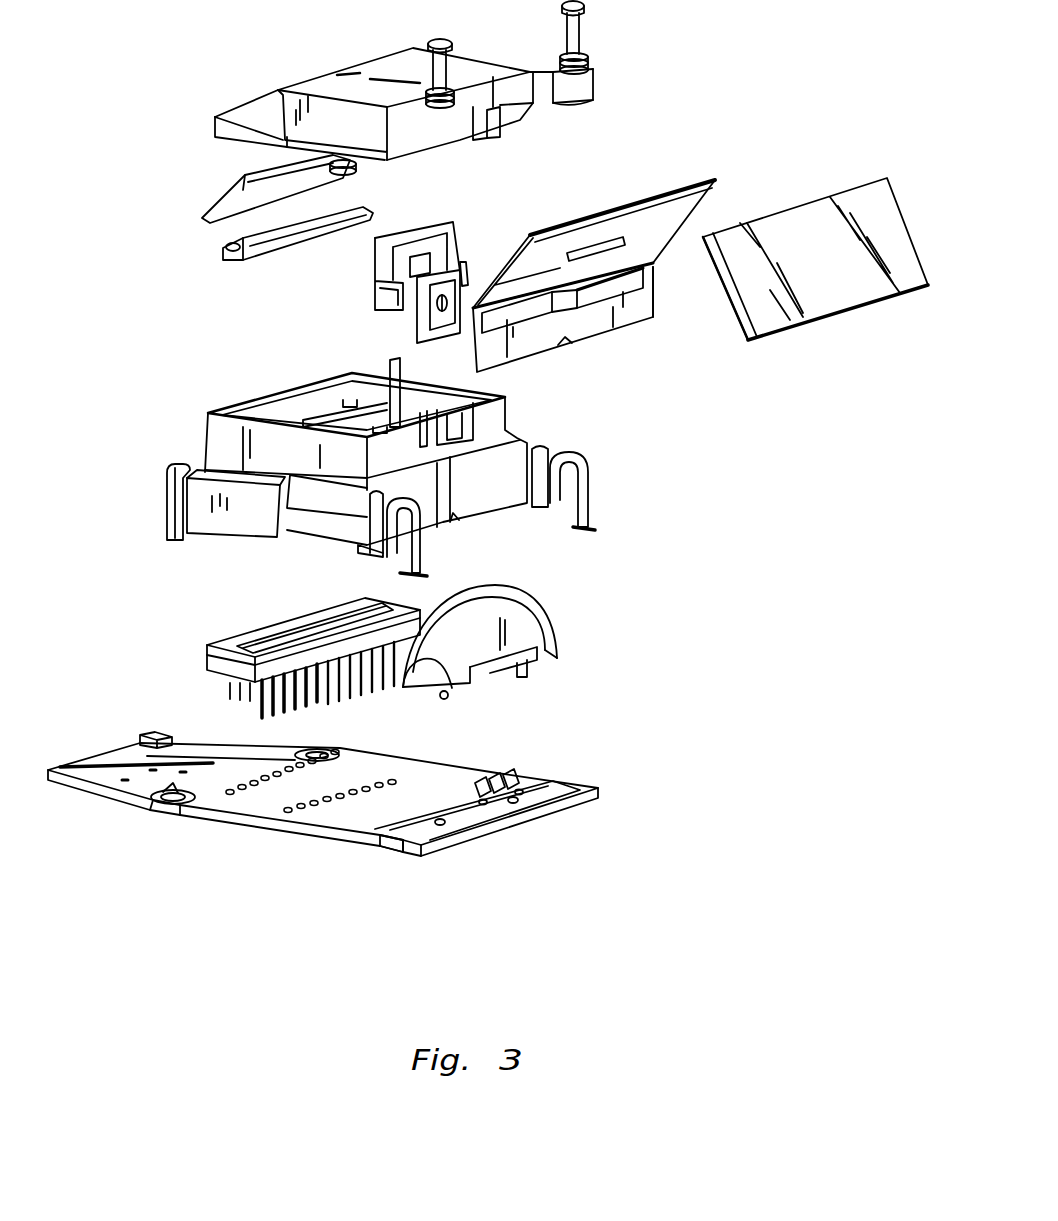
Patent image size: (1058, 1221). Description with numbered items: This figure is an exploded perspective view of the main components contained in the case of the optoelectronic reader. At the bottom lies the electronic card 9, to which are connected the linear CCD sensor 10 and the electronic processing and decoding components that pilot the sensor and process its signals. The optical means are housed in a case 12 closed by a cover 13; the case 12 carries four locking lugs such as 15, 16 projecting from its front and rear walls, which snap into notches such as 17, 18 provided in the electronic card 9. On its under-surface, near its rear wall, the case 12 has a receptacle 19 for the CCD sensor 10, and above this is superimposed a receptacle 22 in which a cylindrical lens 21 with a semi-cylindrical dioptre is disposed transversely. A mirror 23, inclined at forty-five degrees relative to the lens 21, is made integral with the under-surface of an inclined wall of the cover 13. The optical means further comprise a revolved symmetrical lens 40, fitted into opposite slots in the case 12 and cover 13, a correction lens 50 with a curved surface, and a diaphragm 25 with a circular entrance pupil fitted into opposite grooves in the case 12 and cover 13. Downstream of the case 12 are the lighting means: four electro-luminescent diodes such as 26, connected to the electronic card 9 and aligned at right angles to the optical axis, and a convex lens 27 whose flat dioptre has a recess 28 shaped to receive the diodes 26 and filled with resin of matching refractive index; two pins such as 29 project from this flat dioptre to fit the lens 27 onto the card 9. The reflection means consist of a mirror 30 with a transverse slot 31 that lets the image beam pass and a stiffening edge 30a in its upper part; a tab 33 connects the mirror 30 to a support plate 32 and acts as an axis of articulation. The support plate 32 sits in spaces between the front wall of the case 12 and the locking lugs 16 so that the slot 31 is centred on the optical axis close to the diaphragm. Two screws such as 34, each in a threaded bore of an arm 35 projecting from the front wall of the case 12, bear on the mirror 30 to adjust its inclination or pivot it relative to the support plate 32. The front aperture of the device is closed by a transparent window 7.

The transparent window 7 is at (873, 185).
The electronic card 9 is at (324, 813).
The linear CCD sensor 10 is at (207, 657).
The case 12 is at (354, 468).
The cover 13 is at (367, 83).
The locking lug 15 is at (167, 528).
The locking lug 16 is at (443, 542).
The notch 17 is at (160, 800).
The notch 18 is at (397, 843).
The receptacle for the CCD sensor 19 is at (203, 507).
The cylindrical lens 21 is at (337, 227).
The receptacle 22 is at (325, 398).
The mirror 23 is at (230, 195).
The diaphragm 25 is at (467, 280).
The electro-luminescent diode 26 is at (507, 773).
The convex lens 27 is at (507, 653).
The recess 28 is at (493, 665).
The pin 29 is at (447, 698).
The mirror 30 is at (630, 259).
The stiffening edge 30a is at (712, 182).
The transverse slot 31 is at (600, 245).
The support plate 32 is at (654, 313).
The tab 33 is at (562, 297).
The screw 34 is at (582, 30).
The arm 35 is at (543, 93).
The symmetrical lens 40 is at (463, 233).
The correction lens 50 is at (403, 303).